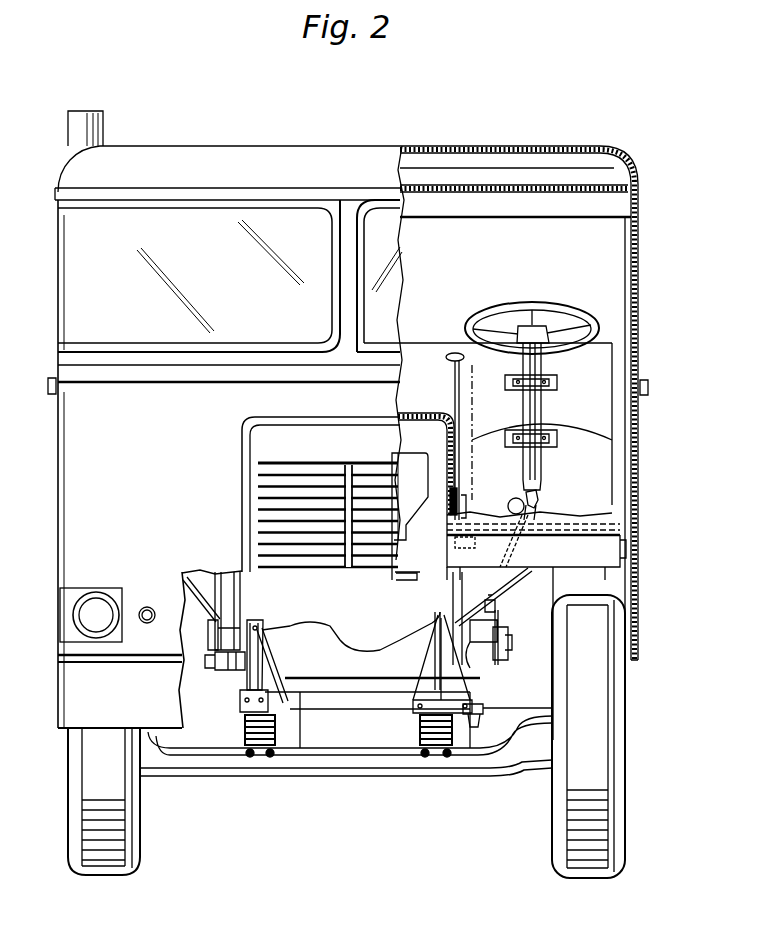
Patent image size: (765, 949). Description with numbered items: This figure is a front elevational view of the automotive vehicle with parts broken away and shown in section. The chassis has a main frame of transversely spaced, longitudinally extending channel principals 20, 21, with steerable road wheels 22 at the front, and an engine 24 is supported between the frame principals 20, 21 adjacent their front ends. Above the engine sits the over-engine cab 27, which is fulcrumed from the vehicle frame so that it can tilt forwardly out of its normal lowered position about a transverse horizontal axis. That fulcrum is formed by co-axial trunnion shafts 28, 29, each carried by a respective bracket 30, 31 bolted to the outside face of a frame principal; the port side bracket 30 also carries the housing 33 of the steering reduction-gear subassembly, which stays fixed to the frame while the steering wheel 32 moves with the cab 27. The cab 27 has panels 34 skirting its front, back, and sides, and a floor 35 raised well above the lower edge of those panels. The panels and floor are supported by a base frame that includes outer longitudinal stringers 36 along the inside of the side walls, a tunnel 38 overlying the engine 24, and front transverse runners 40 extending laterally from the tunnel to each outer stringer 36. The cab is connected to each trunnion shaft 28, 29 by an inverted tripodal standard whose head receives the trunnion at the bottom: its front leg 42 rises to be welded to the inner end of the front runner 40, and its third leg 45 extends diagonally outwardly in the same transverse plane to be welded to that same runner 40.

The channel principal 20 is at (440, 628).
The channel principal 21 is at (258, 622).
The steerable road wheels 22 is at (86, 808).
The engine 24 is at (388, 562).
The cab 27 is at (420, 143).
The trunnion shaft 28 is at (441, 646).
The trunnion shaft 29 is at (215, 654).
The bracket 30 is at (478, 645).
The bracket 31 is at (208, 628).
The steering wheel 32 is at (490, 313).
The housing 33 is at (498, 620).
The panels 34 is at (68, 470).
The floor 35 is at (558, 524).
The outer longitudinal stringer 36 is at (636, 566).
The tunnel 38 is at (428, 414).
The front transverse runner 40 is at (186, 580).
The front leg 42 is at (238, 588).
The third leg 45 is at (183, 604).